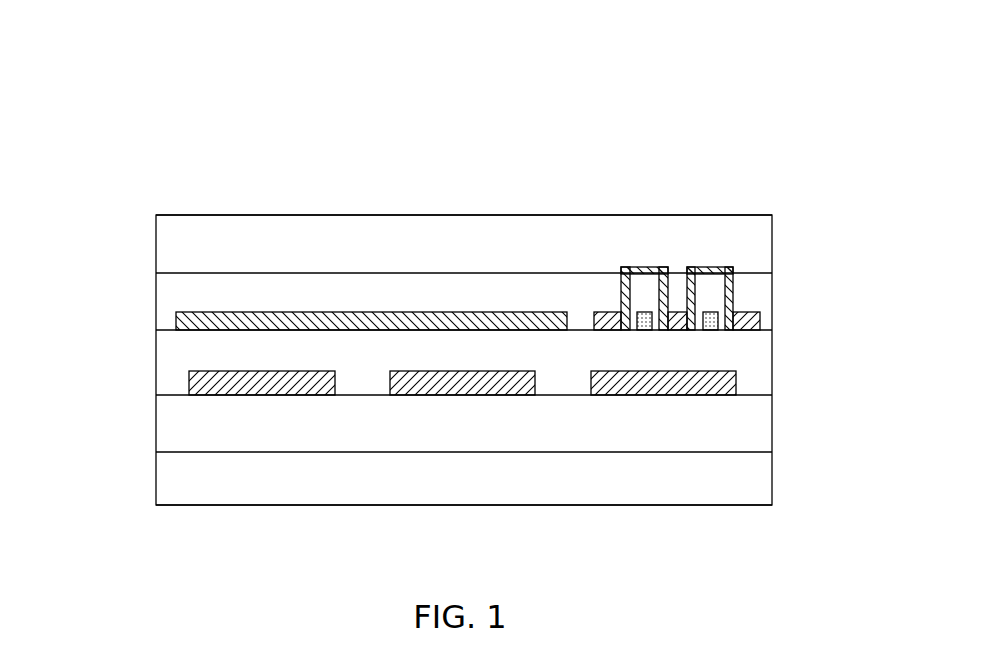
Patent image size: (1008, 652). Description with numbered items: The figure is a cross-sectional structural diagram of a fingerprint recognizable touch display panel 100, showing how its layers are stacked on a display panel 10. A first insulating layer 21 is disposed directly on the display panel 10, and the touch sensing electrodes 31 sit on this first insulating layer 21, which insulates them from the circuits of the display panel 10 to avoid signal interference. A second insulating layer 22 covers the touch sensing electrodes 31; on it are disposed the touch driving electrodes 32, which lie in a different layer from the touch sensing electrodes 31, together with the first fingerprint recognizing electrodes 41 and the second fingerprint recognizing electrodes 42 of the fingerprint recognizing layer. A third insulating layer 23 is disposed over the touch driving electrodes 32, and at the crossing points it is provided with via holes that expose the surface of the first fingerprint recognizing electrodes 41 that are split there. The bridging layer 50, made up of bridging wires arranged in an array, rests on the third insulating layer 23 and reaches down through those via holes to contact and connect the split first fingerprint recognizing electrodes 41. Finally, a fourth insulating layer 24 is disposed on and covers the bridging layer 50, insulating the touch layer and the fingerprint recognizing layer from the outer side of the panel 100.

The fingerprint recognizable touch display panel 100 is at (204, 142).
The display panel 10 is at (748, 487).
The first insulating layer 21 is at (748, 428).
The second insulating layer 22 is at (748, 372).
The third insulating layer 23 is at (200, 278).
The fourth insulating layer 24 is at (748, 250).
The touch sensing electrodes 31 is at (189, 392).
The touch driving electrodes 32 is at (190, 322).
The first fingerprint recognizing electrodes 41 is at (758, 315).
The second fingerprint recognizing electrodes 42 is at (710, 312).
The bridging layer 50 is at (630, 267).